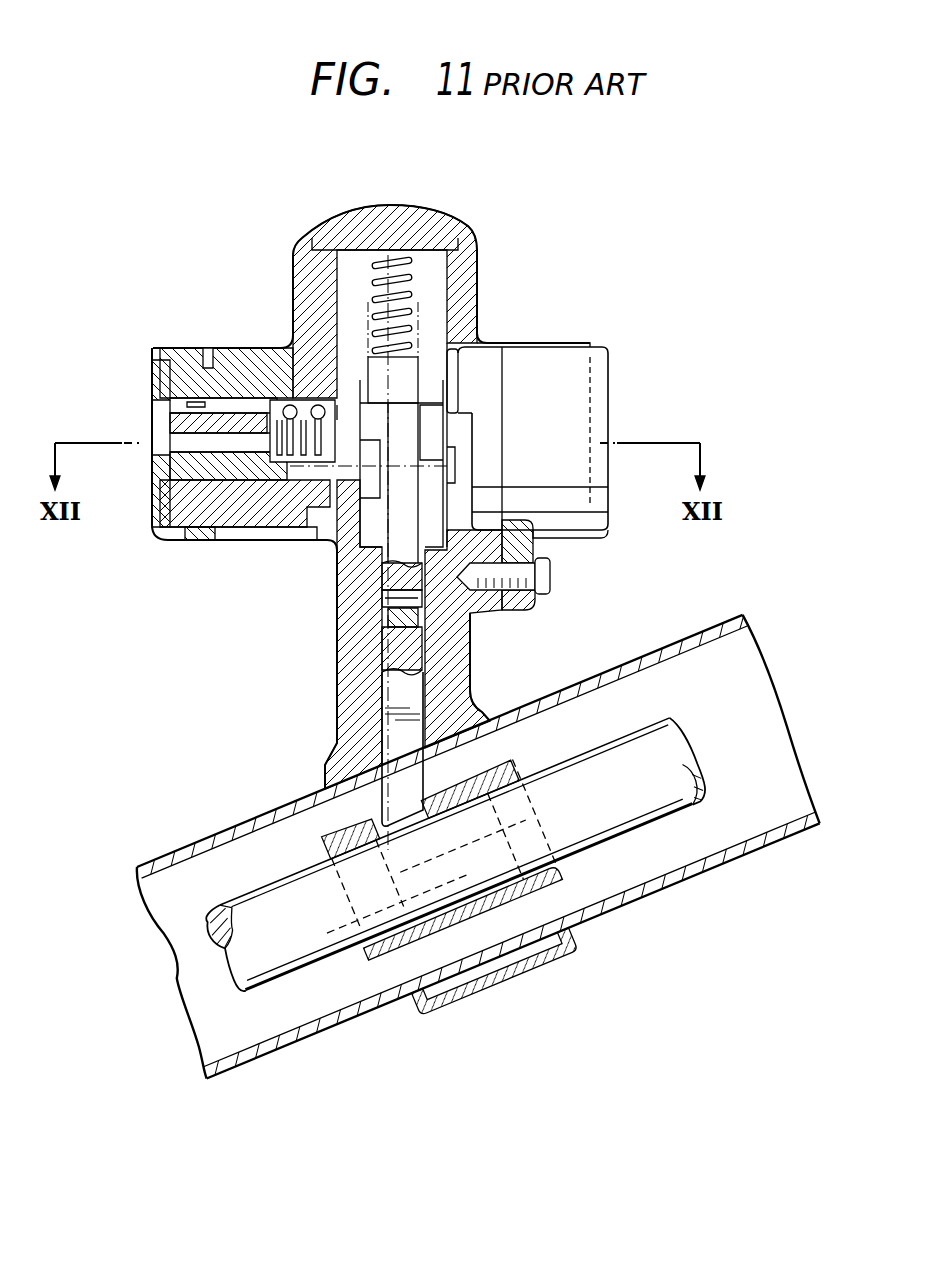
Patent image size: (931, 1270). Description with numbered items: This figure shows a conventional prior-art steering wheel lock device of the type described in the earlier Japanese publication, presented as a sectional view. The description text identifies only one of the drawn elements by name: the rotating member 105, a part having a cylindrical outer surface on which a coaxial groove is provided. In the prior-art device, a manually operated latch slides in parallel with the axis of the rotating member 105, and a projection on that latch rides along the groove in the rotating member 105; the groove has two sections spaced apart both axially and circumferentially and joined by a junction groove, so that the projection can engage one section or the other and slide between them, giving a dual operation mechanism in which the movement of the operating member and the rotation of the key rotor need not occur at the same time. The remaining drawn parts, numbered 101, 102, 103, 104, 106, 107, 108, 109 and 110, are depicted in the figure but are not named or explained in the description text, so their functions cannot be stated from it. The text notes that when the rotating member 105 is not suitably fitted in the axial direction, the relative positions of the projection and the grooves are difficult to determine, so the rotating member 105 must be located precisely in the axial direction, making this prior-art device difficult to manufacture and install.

The pipe 101 is at (156, 862).
The valve body 102 is at (307, 296).
The connector fitting 103 is at (203, 410).
The solenoid housing 104 is at (567, 391).
The rotating member 105 is at (317, 534).
The spring 106 is at (413, 273).
The piston 107 is at (408, 378).
The bolt 108 is at (390, 688).
The tube 109 is at (267, 897).
The clamp 110 is at (492, 775).